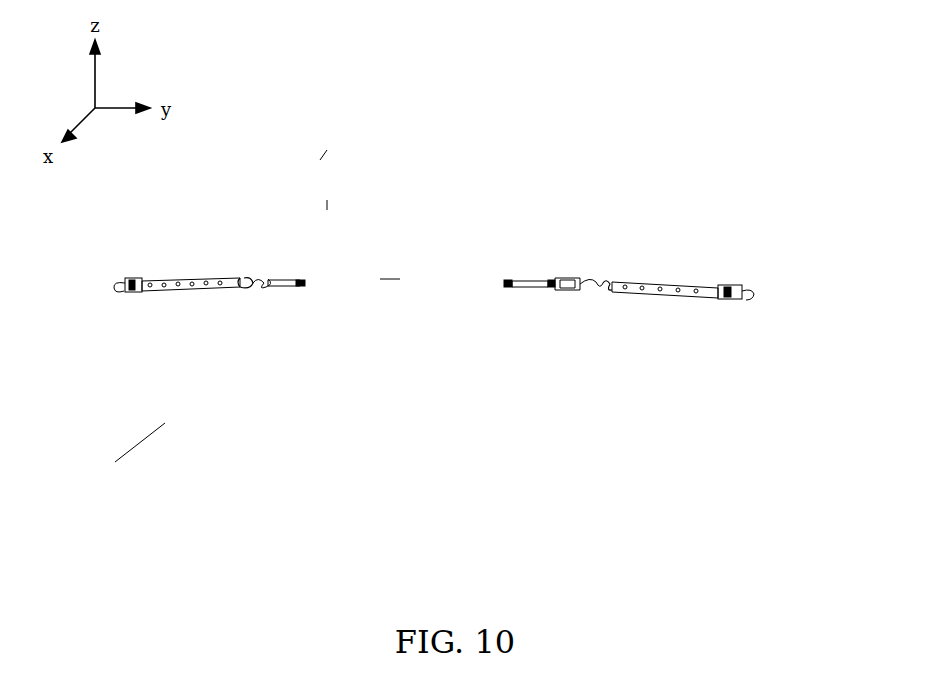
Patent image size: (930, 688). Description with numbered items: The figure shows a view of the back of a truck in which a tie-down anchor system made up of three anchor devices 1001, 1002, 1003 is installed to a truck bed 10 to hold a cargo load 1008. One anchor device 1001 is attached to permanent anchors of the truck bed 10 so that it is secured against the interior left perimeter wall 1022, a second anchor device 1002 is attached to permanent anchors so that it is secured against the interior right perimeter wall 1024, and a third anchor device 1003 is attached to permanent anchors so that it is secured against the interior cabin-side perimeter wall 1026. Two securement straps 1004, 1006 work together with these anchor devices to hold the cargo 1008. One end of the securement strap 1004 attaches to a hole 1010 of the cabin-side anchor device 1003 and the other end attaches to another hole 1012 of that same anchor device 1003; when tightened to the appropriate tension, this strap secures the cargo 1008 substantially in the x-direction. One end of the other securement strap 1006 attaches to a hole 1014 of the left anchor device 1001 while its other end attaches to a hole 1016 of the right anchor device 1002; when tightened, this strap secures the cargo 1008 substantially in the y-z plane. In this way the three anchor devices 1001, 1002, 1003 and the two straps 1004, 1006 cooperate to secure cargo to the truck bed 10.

The truck bed 10 is at (758, 258).
The anchor device 1001 is at (163, 280).
The anchor device 1002 is at (635, 279).
The anchor device 1003 is at (566, 272).
The securement strap 1004 is at (388, 283).
The securement strap 1006 is at (510, 158).
The cargo load 1008 is at (403, 108).
The hole 1010 is at (302, 285).
The hole 1012 is at (511, 284).
The hole 1014 is at (240, 280).
The hole 1016 is at (607, 283).
The left perimeter wall 1022 is at (178, 318).
The right perimeter wall 1024 is at (657, 311).
The cabin-side perimeter wall 1026 is at (411, 345).